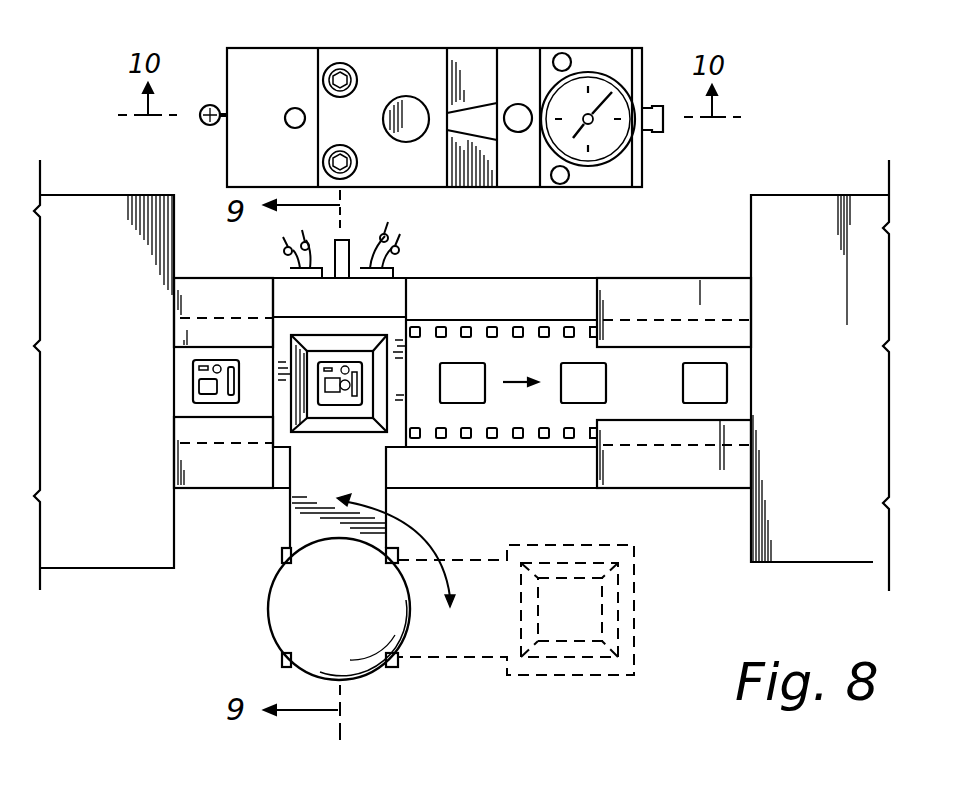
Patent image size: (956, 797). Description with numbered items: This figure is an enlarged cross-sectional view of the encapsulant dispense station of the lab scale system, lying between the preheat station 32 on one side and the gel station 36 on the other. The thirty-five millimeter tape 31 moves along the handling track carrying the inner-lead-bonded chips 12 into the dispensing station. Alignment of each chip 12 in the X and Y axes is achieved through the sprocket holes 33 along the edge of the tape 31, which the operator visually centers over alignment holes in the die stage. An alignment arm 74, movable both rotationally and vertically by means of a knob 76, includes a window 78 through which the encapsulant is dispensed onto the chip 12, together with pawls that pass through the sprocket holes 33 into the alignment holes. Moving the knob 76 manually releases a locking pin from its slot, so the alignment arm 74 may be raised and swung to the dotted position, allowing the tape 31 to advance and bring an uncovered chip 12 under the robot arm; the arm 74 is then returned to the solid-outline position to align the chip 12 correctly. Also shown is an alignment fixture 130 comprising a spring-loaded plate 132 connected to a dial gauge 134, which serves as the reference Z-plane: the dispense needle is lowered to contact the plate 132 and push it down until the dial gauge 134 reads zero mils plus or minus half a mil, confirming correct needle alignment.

The chip 12 is at (193, 376).
The tape 31 is at (530, 348).
The preheat station 32 is at (88, 230).
The sprocket holes 33 is at (441, 327).
The gel station 36 is at (829, 224).
The alignment arm 74 is at (300, 516).
The knob 76 is at (284, 598).
The window 78 is at (318, 432).
The alignment fixture 130 is at (263, 49).
The spring-loaded plate 132 is at (408, 96).
The dial gauge 134 is at (588, 72).